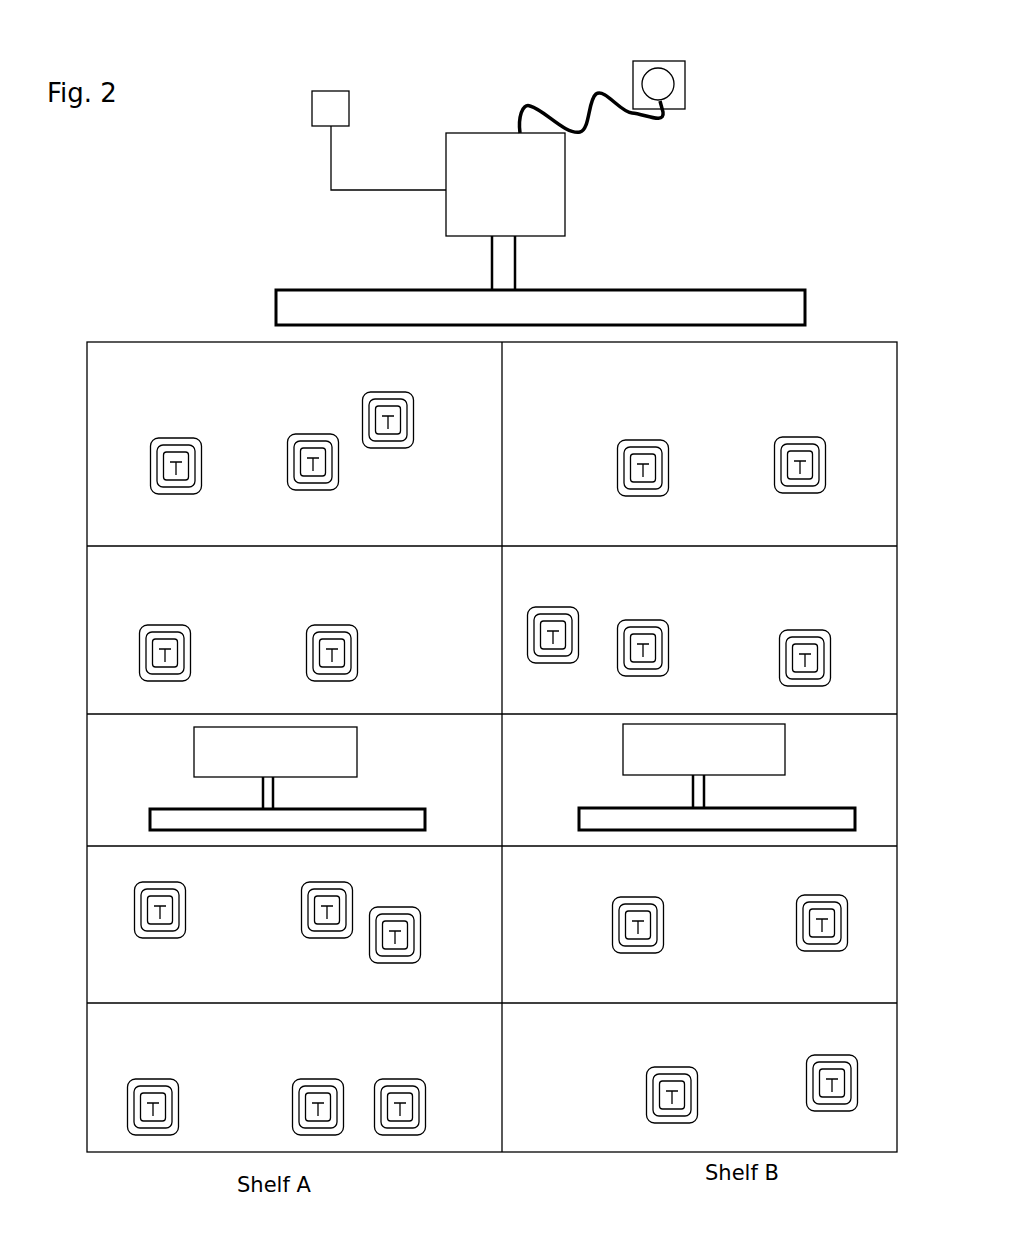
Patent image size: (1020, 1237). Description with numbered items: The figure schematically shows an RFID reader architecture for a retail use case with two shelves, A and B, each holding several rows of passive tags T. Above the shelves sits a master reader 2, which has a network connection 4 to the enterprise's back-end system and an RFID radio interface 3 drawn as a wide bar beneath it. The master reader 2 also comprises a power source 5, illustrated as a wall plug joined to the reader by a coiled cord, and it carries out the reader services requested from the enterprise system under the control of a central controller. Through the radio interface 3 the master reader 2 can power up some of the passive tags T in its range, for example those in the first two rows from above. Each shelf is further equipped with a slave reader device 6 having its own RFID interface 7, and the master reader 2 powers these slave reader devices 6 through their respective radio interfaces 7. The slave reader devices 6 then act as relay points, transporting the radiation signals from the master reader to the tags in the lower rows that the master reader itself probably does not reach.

The master reader 2 is at (552, 213).
The RFID radio interface 3 is at (702, 283).
The network connection 4 is at (338, 121).
The power source 5 is at (693, 89).
The slave reader device 6 is at (202, 762).
The radio interface 7 is at (408, 800).